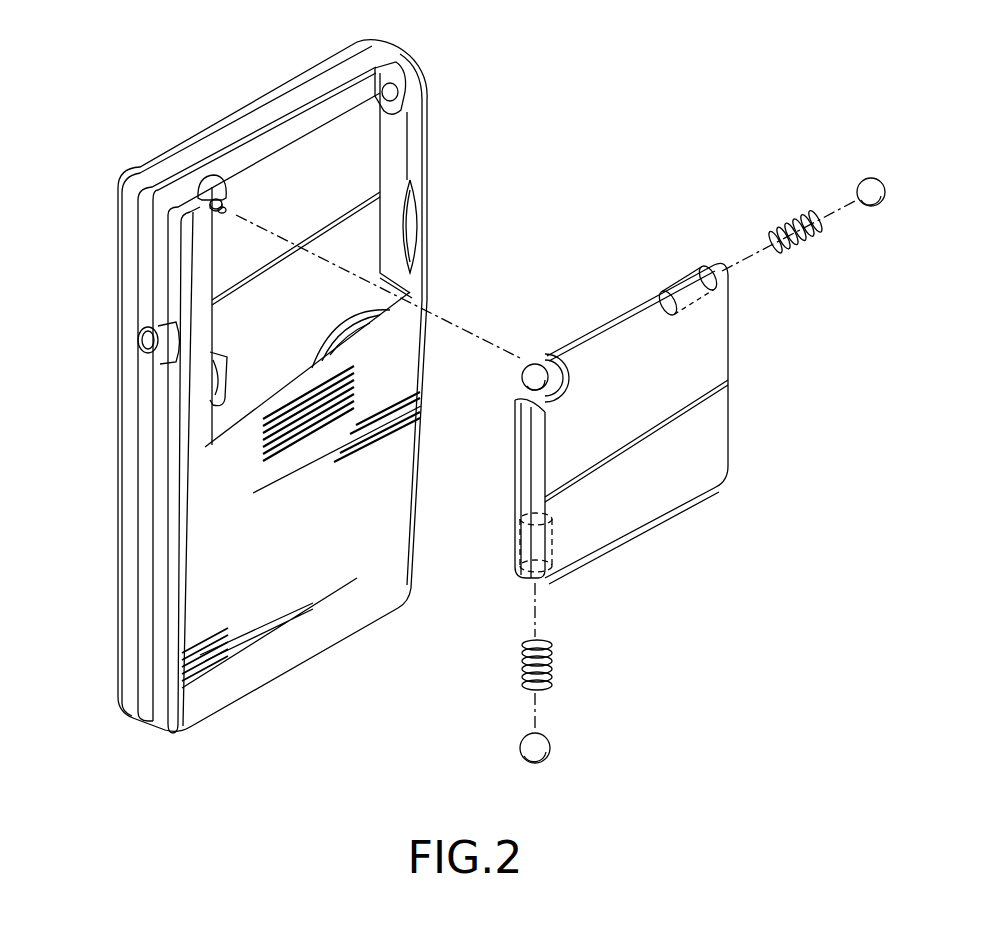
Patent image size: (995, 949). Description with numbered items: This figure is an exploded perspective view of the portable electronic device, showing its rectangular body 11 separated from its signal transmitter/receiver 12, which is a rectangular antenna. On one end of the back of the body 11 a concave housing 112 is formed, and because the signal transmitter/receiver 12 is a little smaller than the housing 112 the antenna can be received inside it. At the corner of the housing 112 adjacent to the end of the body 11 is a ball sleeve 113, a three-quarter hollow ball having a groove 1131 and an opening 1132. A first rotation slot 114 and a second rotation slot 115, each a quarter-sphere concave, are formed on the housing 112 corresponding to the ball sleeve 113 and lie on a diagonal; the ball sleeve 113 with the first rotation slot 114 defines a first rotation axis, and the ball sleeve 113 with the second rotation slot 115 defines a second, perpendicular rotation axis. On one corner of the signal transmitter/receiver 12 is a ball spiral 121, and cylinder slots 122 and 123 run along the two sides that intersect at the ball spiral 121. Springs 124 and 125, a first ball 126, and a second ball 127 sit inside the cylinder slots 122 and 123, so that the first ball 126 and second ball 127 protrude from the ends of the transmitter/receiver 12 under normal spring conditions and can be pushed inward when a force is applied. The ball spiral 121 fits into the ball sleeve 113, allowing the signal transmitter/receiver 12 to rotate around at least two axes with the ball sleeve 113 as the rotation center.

The body 11 is at (278, 368).
The concave housing 112 is at (350, 226).
The ball sleeve 113 is at (211, 180).
The groove 1131 is at (232, 198).
The opening 1132 is at (234, 222).
The first rotation slot 114 is at (385, 86).
The second rotation slot 115 is at (207, 356).
The signal transmitter/receiver 12 is at (700, 440).
The ball spiral 121 is at (533, 364).
The cylinder slot 122 is at (684, 272).
The cylinder slot 123 is at (538, 543).
The spring 124 is at (791, 226).
The spring 125 is at (553, 668).
The first ball 126 is at (874, 182).
The second ball 127 is at (552, 748).